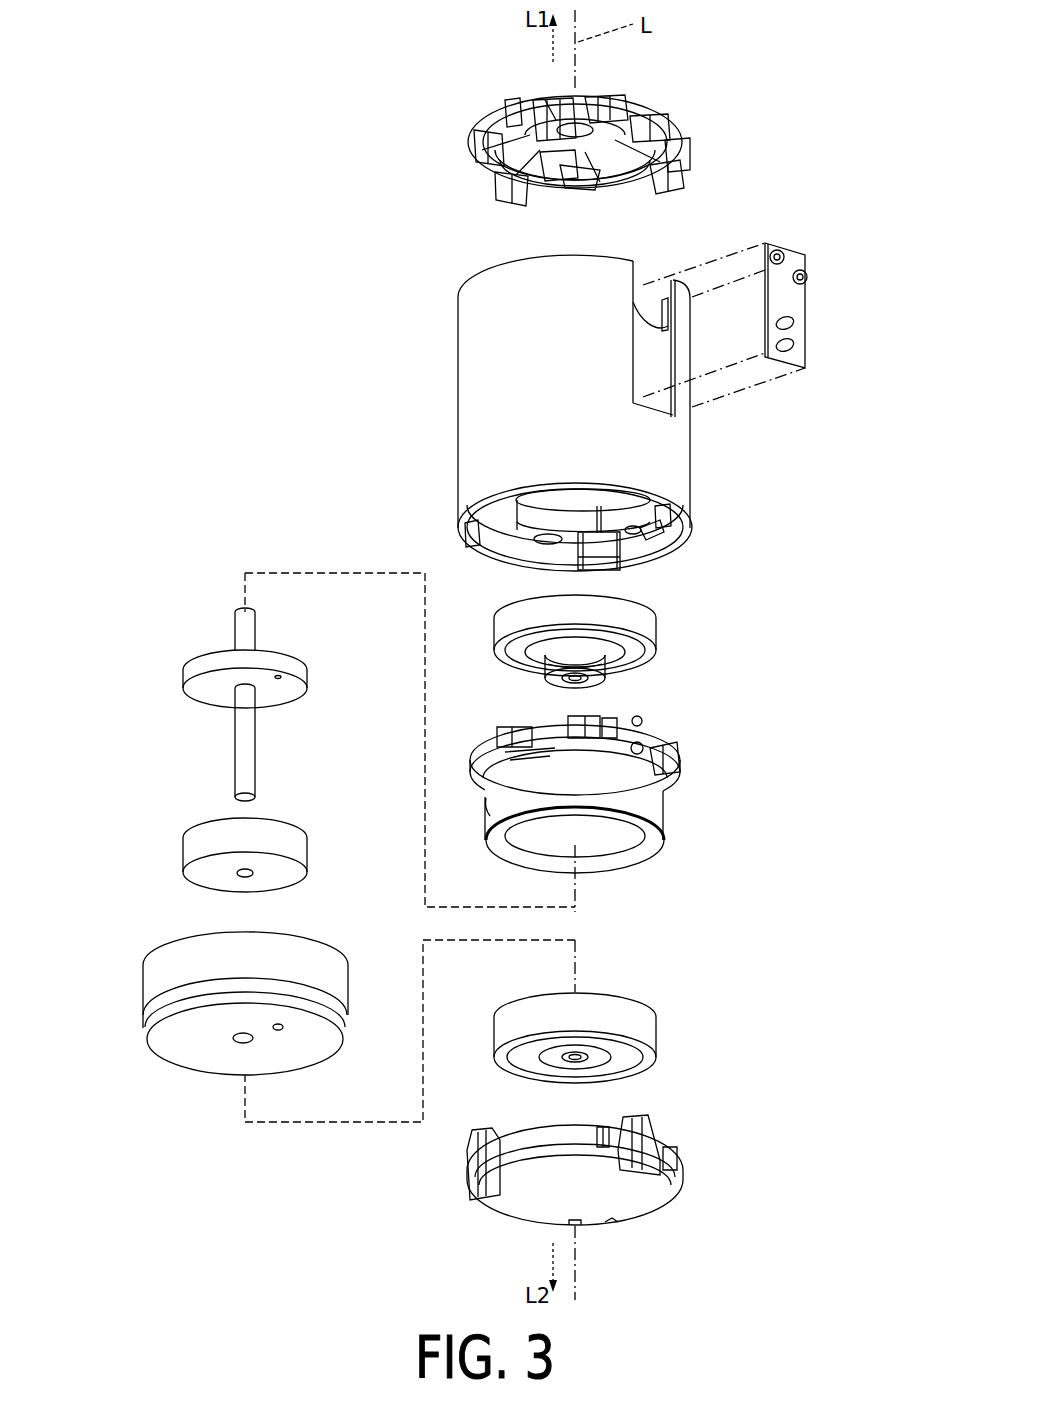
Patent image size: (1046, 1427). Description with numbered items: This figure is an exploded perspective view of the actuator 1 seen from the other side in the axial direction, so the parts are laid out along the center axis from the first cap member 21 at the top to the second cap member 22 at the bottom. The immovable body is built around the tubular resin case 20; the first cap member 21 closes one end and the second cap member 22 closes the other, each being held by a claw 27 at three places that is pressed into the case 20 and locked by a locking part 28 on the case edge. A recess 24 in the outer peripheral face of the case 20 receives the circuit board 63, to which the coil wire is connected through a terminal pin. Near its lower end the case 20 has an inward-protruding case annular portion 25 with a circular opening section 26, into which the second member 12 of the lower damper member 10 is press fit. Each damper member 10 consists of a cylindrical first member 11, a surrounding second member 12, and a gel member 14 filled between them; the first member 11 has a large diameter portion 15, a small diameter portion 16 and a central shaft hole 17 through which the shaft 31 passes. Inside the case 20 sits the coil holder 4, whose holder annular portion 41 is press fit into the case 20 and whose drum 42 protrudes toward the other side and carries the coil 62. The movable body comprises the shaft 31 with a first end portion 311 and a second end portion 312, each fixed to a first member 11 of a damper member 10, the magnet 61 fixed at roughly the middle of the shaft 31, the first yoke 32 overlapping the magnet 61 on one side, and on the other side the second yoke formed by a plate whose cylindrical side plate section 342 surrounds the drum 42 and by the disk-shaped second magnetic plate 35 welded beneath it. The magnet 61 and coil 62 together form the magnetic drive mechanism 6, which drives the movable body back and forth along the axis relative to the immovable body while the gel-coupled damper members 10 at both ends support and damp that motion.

The actuator 1 is at (326, 171).
The first cap member 21 is at (700, 124).
The claw 27 is at (547, 113).
The case 20 is at (659, 424).
The recess 24 is at (693, 410).
The circuit board 63 is at (810, 302).
The locking part 28 is at (658, 517).
The case annular portion 25 is at (653, 532).
The opening section 26 is at (637, 527).
The damper member 10 is at (665, 853).
The second member 12 is at (653, 635).
The gel member 14 is at (620, 655).
The large diameter portion 15 is at (603, 662).
The small diameter portion 16 is at (597, 687).
The first member 11 is at (641, 878).
The shaft hole 17 is at (570, 686).
The coil holder 4 is at (633, 794).
The holder annular portion 41 is at (680, 772).
The drum 42 is at (612, 832).
The first yoke 32 is at (187, 673).
The shaft 31 is at (236, 707).
The first end portion 311 is at (255, 628).
The second end portion 312 is at (248, 777).
The magnetic drive mechanism 6 is at (338, 819).
The magnet 61 is at (297, 837).
The coil 62 is at (494, 806).
The side plate section 342 is at (150, 982).
The second magnetic plate 35 is at (203, 1062).
The second cap member 22 is at (686, 1204).